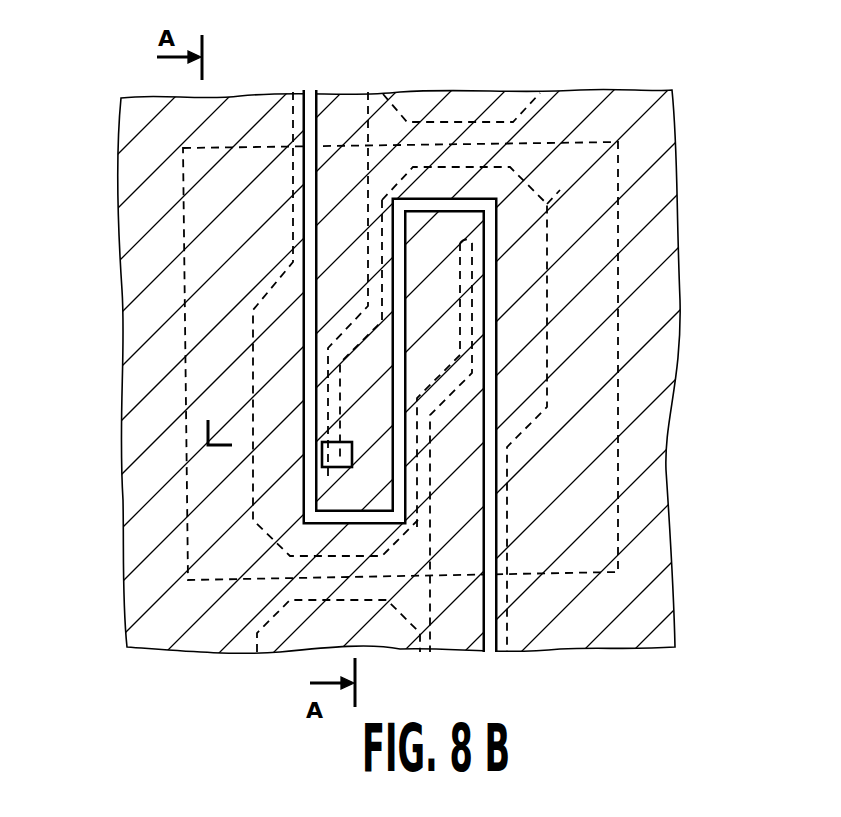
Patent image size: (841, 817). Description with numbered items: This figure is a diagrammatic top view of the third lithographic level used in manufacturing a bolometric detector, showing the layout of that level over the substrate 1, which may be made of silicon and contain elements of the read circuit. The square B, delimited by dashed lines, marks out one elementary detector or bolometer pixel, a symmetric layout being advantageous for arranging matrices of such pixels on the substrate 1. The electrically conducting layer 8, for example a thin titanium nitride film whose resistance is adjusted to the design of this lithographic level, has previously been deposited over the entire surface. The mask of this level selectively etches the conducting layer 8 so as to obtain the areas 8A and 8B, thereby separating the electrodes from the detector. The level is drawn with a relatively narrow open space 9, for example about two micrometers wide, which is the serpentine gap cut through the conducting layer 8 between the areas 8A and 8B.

The substrate 1 is at (668, 481).
The electrically conducting layer 8 is at (630, 211).
The area 8A is at (290, 342).
The area 8B is at (343, 188).
The open space 9 is at (490, 252).
The square B is at (615, 338).